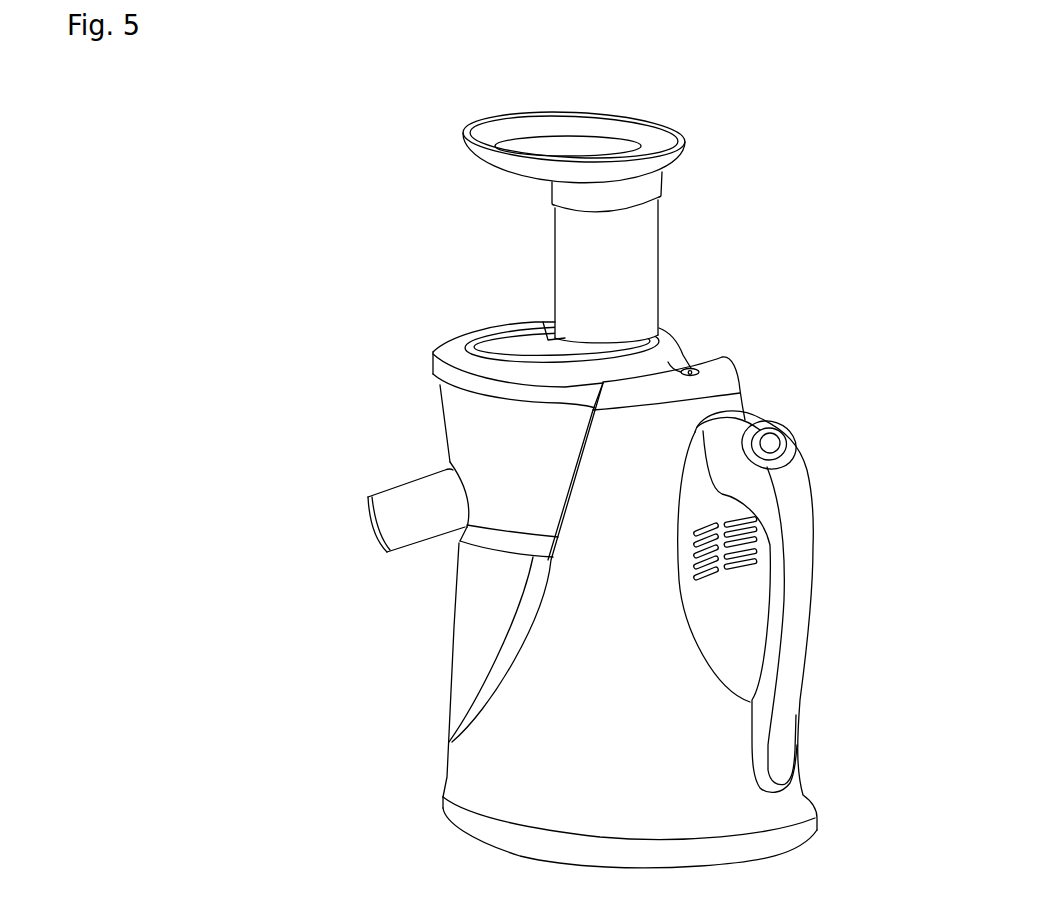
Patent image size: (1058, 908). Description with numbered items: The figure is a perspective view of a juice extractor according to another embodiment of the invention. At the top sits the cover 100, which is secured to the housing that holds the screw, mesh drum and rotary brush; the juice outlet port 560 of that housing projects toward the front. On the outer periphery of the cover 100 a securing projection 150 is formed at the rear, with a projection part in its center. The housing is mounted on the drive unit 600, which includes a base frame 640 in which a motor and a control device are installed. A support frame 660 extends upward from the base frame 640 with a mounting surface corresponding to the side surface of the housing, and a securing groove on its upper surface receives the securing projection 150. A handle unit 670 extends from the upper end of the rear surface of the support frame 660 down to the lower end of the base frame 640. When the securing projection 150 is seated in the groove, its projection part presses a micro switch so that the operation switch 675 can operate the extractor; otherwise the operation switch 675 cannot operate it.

The cover 100 is at (438, 318).
The securing projection 150 is at (683, 364).
The juice outlet port 560 is at (405, 493).
The drive unit 600 is at (438, 777).
The base frame 640 is at (468, 643).
The support frame 660 is at (743, 394).
The handle unit 670 is at (811, 538).
The operation switch 675 is at (797, 441).